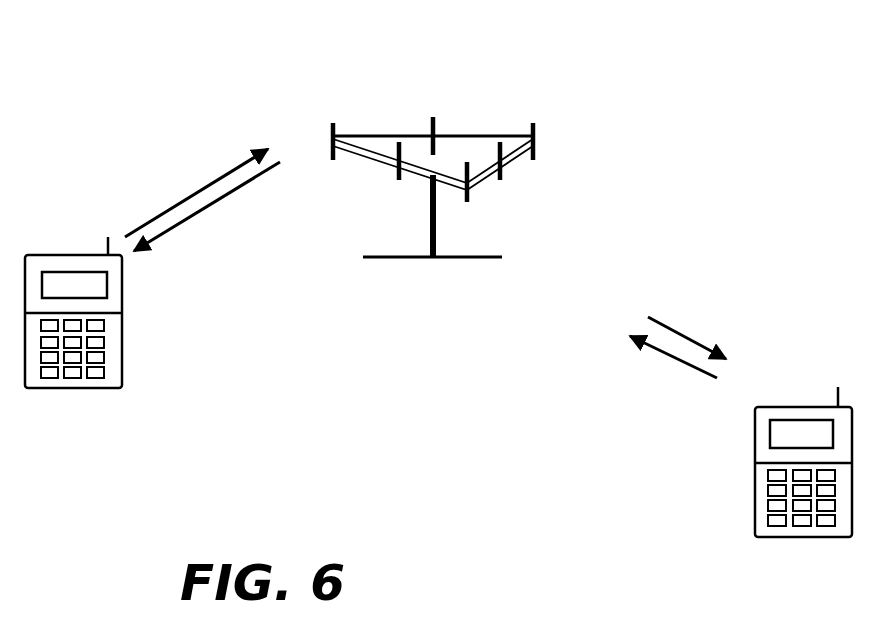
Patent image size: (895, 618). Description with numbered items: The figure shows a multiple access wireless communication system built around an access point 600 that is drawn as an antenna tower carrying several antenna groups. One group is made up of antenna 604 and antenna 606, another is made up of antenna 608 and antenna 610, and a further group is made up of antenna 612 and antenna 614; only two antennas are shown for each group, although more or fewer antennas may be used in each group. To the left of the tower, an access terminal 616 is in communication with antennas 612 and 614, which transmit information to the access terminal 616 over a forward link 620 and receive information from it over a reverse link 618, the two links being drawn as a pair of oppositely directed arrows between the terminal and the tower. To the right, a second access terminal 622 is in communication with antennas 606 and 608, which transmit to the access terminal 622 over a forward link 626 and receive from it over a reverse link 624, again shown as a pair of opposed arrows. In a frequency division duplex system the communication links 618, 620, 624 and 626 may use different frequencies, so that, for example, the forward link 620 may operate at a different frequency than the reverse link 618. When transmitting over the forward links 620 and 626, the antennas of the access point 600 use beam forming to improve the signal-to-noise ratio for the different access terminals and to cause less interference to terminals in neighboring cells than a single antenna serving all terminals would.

The access point 600 is at (432, 258).
The antenna 604 is at (470, 195).
The antenna 606 is at (505, 177).
The antenna 608 is at (540, 143).
The antenna 610 is at (434, 122).
The antenna 612 is at (335, 133).
The antenna 614 is at (399, 180).
The access terminal 616 is at (92, 255).
The reverse link 618 is at (197, 192).
The forward link 620 is at (213, 207).
The access terminal 622 is at (782, 407).
The reverse link 624 is at (660, 350).
The forward link 626 is at (690, 340).